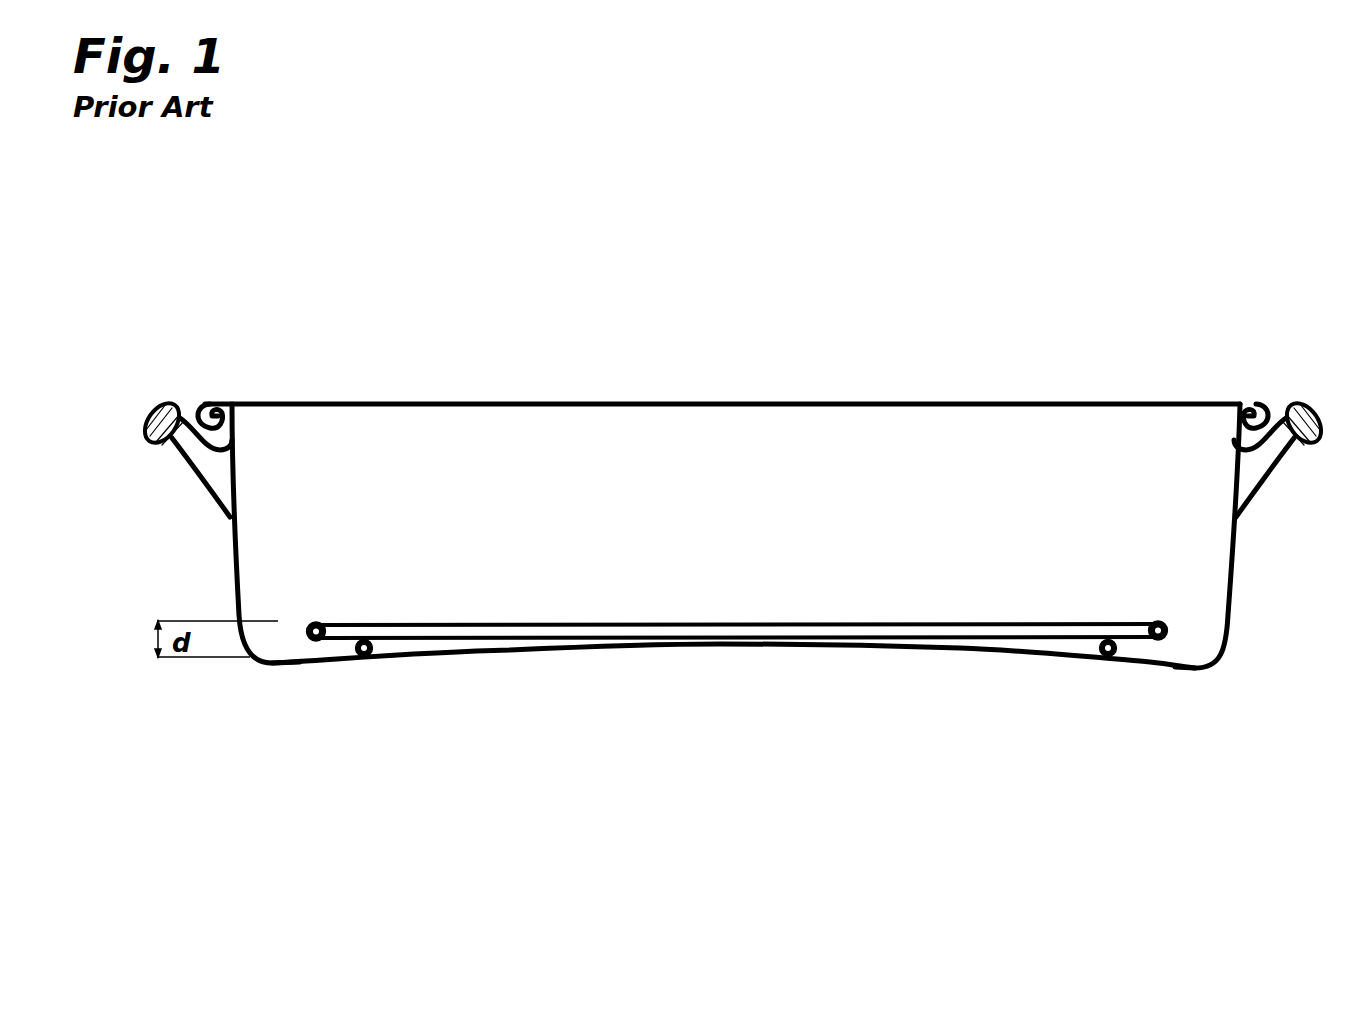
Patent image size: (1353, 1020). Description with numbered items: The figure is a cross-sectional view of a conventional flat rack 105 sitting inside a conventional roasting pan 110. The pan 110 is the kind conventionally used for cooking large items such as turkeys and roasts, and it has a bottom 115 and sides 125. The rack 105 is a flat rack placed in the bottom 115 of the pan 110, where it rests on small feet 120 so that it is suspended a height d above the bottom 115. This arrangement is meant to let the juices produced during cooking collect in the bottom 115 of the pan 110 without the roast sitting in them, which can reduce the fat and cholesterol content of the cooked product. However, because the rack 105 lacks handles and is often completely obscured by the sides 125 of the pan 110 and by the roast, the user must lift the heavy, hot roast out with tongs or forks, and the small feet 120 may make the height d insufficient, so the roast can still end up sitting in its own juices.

The rack 105 is at (1130, 620).
The pan 110 is at (867, 402).
The bottom 115 is at (760, 645).
The feet 120 is at (380, 653).
The sides 125 is at (530, 485).